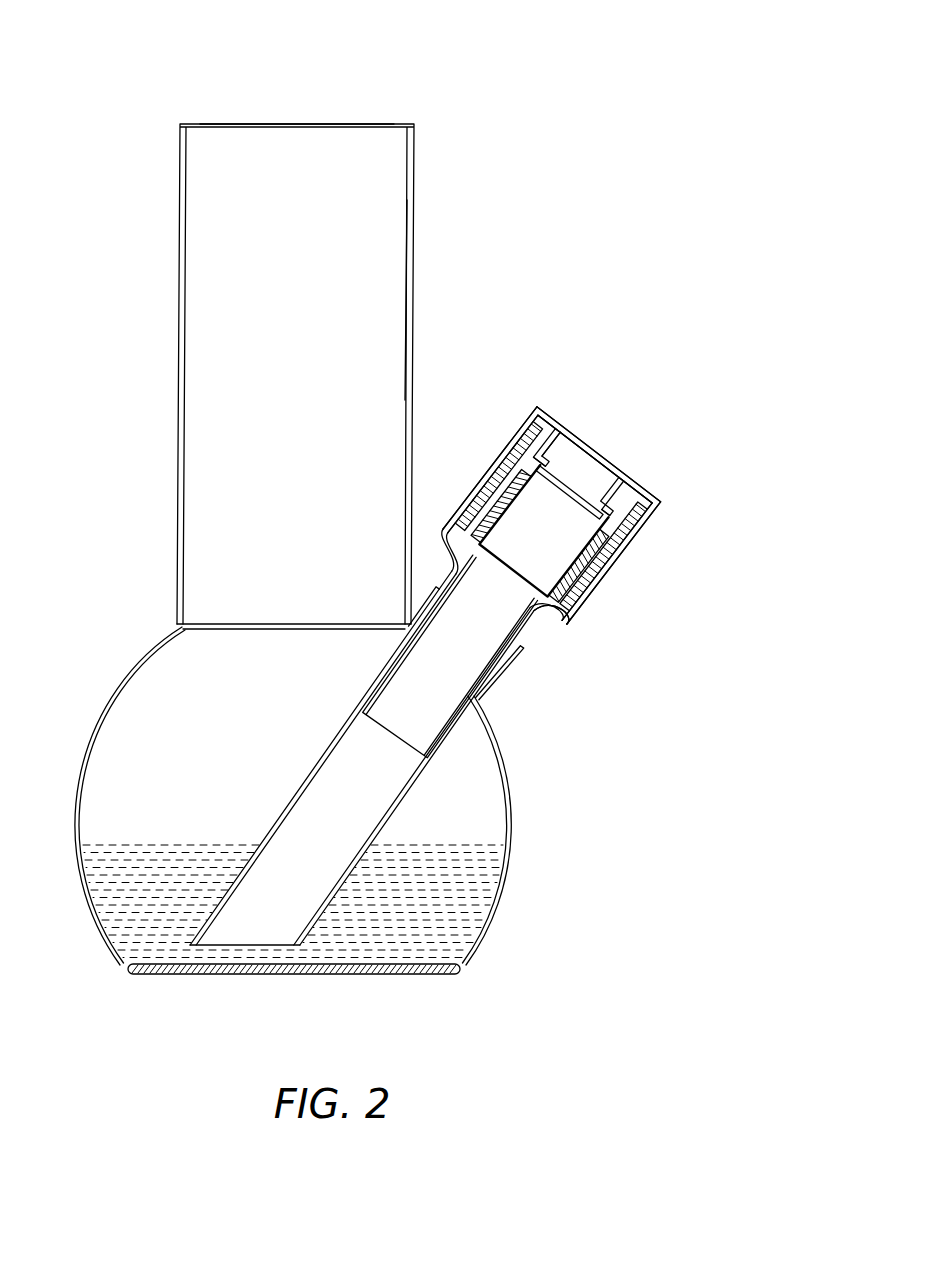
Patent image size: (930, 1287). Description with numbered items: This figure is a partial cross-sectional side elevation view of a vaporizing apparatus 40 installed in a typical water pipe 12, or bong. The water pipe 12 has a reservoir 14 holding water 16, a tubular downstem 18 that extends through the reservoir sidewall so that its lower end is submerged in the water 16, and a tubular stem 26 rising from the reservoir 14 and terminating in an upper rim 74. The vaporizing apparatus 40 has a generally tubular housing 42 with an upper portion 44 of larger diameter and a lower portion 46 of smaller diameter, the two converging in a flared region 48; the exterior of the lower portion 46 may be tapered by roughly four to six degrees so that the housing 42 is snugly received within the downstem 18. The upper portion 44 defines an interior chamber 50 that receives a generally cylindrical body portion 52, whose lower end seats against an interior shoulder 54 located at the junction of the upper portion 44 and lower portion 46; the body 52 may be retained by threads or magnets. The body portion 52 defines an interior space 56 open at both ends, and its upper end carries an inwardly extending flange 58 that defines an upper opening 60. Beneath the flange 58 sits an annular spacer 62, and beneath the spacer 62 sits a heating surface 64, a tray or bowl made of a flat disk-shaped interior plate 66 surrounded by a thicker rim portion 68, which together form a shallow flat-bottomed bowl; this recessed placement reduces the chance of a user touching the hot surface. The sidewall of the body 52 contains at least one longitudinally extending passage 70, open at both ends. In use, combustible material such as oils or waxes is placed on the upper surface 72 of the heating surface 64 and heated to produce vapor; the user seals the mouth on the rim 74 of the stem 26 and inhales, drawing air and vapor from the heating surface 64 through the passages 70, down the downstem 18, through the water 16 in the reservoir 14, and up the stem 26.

The water pipe 12 is at (416, 180).
The reservoir 14 is at (130, 668).
The water 16 is at (483, 905).
The tubular downstem 18 is at (408, 795).
The tubular stem 26 is at (415, 232).
The vaporizing apparatus 40 is at (655, 492).
The housing 42 is at (480, 482).
The upper portion 44 is at (608, 575).
The lower portion 46 is at (462, 717).
The flared region 48 is at (542, 603).
The interior chamber 50 is at (572, 540).
The body portion 52 is at (637, 528).
The interior shoulder 54 is at (563, 625).
The interior space 56 is at (505, 457).
The inwardly extending flange 58 is at (556, 432).
The upper opening 60 is at (557, 459).
The annular spacer 62 is at (610, 508).
The heating surface 64 is at (616, 483).
The interior plate 66 is at (564, 491).
The rim portion 68 is at (550, 477).
The longitudinally extending passage 70 is at (541, 458).
The upper surface 72 is at (583, 452).
The upper rim 74 is at (268, 122).